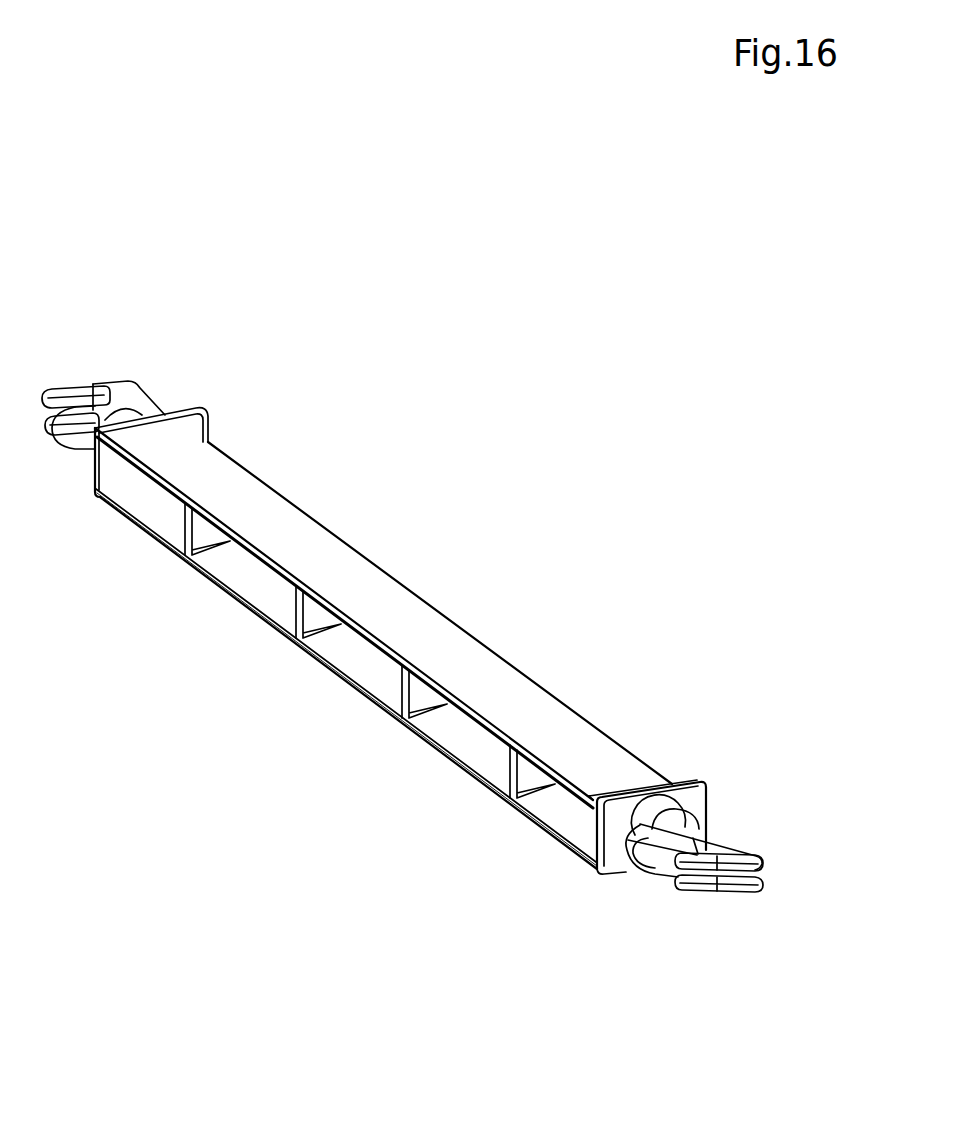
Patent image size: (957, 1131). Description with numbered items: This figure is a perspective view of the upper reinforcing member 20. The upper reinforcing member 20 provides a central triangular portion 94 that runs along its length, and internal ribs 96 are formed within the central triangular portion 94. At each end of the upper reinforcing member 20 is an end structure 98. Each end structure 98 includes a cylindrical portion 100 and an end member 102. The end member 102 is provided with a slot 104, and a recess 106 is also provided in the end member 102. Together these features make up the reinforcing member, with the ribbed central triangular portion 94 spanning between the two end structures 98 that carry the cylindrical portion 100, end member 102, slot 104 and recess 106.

The upper reinforcing member 20 is at (368, 404).
The central triangular portion 94 is at (373, 563).
The internal ribs 96 is at (292, 613).
The end structure 98 is at (786, 814).
The cylindrical portion 100 is at (673, 810).
The end member 102 is at (745, 887).
The slot 104 is at (785, 860).
The recess 106 is at (654, 888).